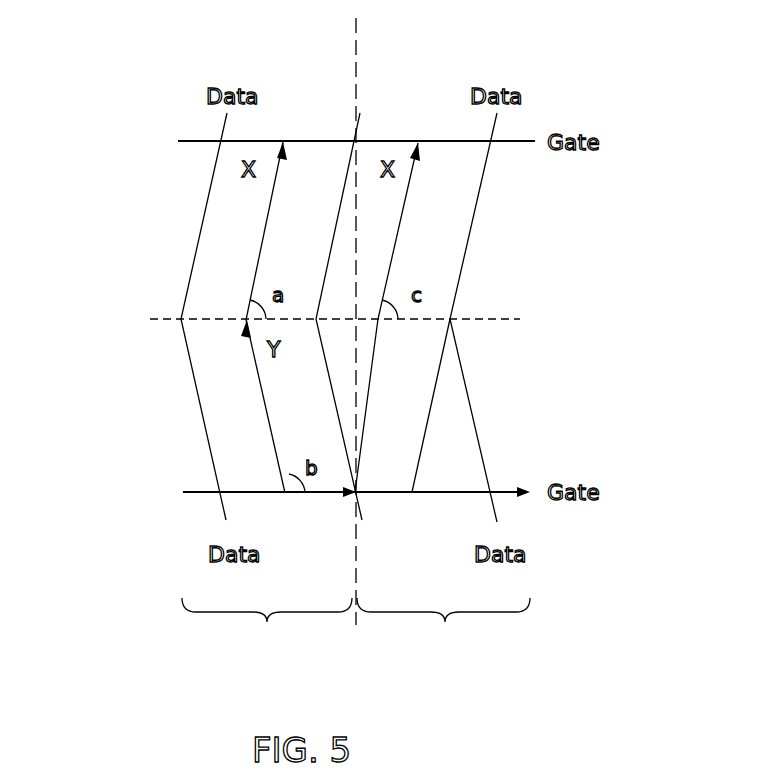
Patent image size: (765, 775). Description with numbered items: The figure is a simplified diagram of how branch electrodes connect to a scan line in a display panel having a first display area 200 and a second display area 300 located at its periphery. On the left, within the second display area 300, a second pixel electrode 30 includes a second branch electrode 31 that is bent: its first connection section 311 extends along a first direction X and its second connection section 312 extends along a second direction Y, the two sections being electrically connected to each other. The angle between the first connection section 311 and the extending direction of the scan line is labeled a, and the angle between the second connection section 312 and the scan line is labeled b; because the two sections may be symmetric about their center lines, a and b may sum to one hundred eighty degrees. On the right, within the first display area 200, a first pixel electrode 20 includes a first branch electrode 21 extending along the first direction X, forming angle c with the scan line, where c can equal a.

The second pixel electrode 30 is at (235, 450).
The second branch electrode 31 is at (157, 317).
The first connection section 311 is at (265, 222).
The second connection section 312 is at (197, 406).
The first branch electrode 21 is at (402, 222).
The first pixel electrode 20 is at (450, 417).
The second display area 300 is at (267, 629).
The first display area 200 is at (443, 629).